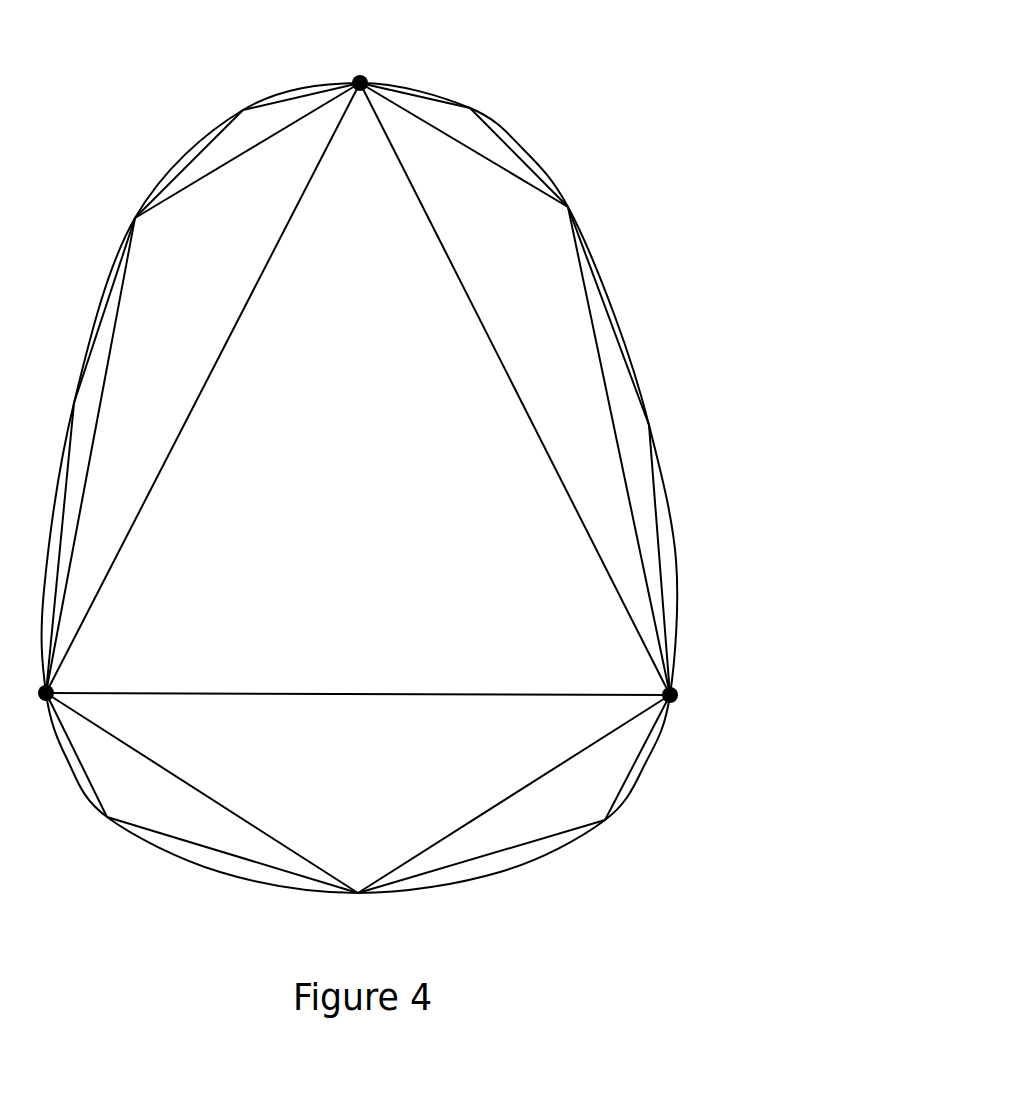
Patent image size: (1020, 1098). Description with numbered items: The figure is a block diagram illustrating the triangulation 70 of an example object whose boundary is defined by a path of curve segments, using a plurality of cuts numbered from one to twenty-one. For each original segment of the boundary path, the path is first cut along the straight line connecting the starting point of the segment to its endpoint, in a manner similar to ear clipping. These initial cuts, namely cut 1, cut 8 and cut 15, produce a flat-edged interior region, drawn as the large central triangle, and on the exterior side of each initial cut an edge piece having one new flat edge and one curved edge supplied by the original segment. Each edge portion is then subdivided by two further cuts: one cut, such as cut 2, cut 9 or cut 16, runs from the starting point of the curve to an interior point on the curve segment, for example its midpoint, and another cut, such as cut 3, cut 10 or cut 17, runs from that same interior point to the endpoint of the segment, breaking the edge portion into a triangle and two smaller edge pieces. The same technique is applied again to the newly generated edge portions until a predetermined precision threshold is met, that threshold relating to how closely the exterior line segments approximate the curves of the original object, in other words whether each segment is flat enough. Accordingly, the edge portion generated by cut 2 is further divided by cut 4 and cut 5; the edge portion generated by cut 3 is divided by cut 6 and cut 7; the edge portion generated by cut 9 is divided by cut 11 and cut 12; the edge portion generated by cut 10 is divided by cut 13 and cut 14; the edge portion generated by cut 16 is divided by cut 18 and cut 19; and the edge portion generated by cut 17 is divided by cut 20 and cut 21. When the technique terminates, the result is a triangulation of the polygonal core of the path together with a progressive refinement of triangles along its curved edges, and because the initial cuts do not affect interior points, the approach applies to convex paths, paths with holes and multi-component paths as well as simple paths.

The triangulation 70 is at (358, 462).
The cut 1 is at (203, 388).
The cut 2 is at (90, 455).
The cut 3 is at (247, 150).
The cut 4 is at (64, 548).
The cut 5 is at (104, 310).
The cut 6 is at (189, 164).
The cut 7 is at (301, 105).
The cut 8 is at (515, 389).
The cut 9 is at (464, 145).
The cut 10 is at (619, 451).
The cut 11 is at (415, 104).
The cut 12 is at (517, 157).
The cut 13 is at (608, 316).
The cut 14 is at (650, 560).
The cut 15 is at (358, 681).
The cut 16 is at (514, 794).
The cut 17 is at (202, 793).
The cut 18 is at (637, 757).
The cut 19 is at (481, 856).
The cut 20 is at (232, 855).
The cut 21 is at (81, 755).